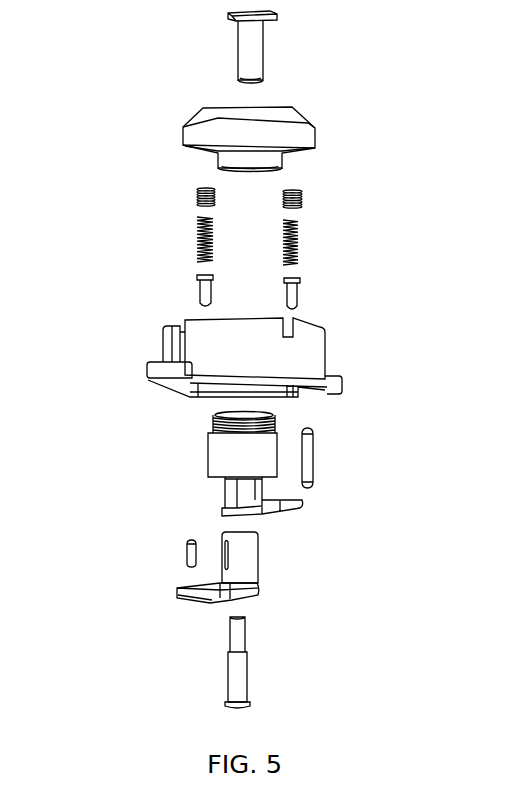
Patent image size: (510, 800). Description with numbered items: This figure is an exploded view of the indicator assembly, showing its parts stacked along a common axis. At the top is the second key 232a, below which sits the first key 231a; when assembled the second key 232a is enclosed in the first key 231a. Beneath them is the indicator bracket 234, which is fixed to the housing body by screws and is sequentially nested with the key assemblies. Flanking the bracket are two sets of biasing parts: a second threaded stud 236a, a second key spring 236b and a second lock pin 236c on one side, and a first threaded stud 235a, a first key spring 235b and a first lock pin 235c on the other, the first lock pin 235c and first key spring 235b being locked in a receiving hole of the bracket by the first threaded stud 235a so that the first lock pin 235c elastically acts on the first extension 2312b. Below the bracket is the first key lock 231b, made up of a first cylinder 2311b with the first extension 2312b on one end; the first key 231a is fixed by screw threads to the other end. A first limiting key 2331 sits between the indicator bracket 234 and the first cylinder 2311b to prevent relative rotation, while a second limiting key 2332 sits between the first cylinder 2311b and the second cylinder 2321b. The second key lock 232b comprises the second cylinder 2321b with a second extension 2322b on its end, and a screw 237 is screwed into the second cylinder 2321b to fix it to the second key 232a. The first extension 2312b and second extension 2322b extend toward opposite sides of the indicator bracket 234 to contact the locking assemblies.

The second key 232a is at (304, 47).
The first key 231a is at (306, 139).
The second threaded stud 236a is at (148, 188).
The second key spring 236b is at (147, 237).
The second lock pin 236c is at (147, 284).
The first threaded stud 235a is at (350, 211).
The first key spring 235b is at (350, 245).
The first lock pin 235c is at (351, 300).
The indicator bracket 234 is at (283, 357).
The first key lock 231b is at (174, 464).
The first cylinder 2311b is at (197, 444).
The first extension 2312b is at (210, 496).
The first limiting key 2331 is at (366, 458).
The second limiting key 2332 is at (135, 544).
The second key lock 232b is at (311, 577).
The second cylinder 2321b is at (296, 558).
The second extension 2322b is at (268, 603).
The screw 237 is at (289, 662).